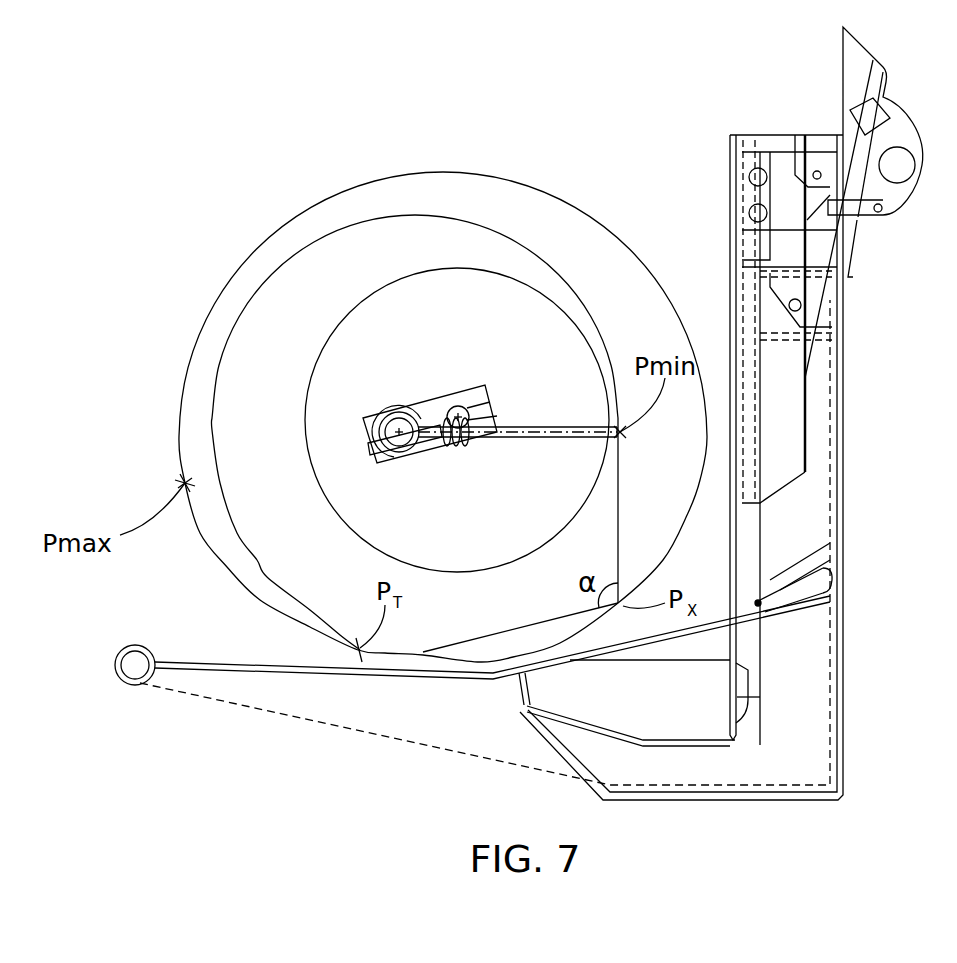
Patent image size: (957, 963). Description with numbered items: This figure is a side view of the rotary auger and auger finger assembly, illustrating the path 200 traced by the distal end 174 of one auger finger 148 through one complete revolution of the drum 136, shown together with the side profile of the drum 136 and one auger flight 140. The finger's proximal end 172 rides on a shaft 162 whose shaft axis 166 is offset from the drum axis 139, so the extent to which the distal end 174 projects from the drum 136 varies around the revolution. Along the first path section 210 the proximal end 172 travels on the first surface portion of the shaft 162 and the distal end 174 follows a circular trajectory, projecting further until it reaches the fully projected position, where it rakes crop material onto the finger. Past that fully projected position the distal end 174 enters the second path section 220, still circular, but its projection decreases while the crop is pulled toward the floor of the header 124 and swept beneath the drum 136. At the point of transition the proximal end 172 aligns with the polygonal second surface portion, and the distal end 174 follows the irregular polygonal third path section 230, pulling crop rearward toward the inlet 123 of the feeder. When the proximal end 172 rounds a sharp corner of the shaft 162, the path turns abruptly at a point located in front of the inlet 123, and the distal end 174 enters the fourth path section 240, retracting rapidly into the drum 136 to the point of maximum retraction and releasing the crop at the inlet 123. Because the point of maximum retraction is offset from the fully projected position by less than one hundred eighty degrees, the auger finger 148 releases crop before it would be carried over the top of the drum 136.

The path 200 is at (390, 410).
The first path section 210 is at (378, 213).
The second path section 220 is at (255, 592).
The fourth path section 240 is at (620, 505).
The auger flight 140 is at (555, 190).
The drum 136 is at (457, 410).
The shaft axis 166 is at (395, 425).
The shaft 162 is at (378, 447).
The proximal end 172 is at (437, 447).
The drum axis 139 is at (458, 405).
The auger finger 148 is at (531, 442).
The distal end 174 is at (622, 433).
The inlet 123 is at (723, 578).
The third path section 230 is at (457, 652).
The header 124 is at (266, 722).